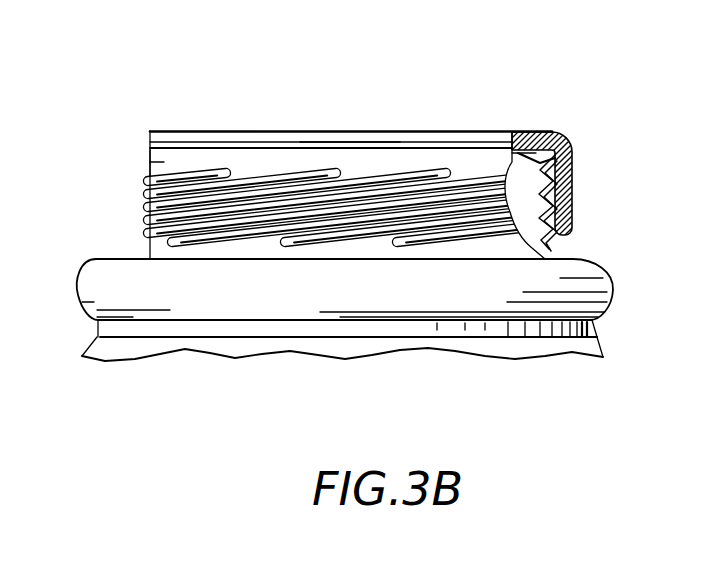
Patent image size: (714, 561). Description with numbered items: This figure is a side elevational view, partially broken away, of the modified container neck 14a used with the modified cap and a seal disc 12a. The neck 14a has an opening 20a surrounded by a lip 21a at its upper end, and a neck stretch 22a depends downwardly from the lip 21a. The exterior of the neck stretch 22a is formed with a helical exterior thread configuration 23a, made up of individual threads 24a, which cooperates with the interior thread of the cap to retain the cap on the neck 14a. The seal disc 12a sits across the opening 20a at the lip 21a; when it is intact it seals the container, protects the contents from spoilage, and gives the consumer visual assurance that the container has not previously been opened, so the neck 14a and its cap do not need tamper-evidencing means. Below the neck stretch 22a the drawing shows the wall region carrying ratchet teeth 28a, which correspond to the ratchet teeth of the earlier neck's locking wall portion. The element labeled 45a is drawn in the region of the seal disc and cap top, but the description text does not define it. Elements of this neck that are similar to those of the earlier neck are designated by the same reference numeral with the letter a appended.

The seal disc 12a is at (297, 131).
The neck 14a is at (423, 115).
The opening 20a is at (522, 132).
The lip 21a is at (565, 132).
The neck stretch 22a is at (147, 168).
The exterior thread configuration 23a is at (140, 208).
The thread 24a is at (192, 170).
The top panel 45a is at (345, 148).
The ratchet teeth 28a is at (367, 259).